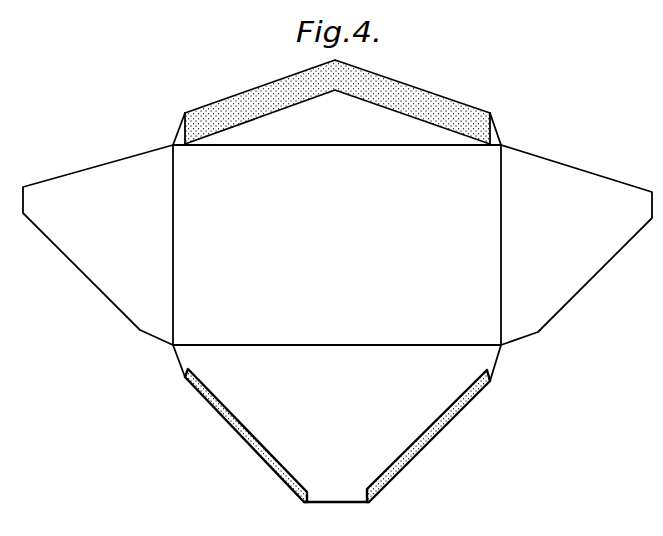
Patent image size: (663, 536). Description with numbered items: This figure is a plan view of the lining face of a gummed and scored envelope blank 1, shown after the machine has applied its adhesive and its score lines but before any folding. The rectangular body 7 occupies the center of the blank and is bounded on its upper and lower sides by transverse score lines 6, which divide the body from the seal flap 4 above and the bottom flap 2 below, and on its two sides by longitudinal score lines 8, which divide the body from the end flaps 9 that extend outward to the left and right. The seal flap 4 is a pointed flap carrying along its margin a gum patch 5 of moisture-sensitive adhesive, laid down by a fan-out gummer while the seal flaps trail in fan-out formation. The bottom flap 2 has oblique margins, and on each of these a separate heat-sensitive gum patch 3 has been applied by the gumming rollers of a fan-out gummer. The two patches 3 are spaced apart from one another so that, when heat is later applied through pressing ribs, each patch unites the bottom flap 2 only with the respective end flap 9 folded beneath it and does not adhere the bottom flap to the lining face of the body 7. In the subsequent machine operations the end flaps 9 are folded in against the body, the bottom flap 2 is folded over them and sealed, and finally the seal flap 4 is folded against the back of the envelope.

The blank 1 is at (452, 93).
The bottom flap 2 is at (475, 355).
The gum patches 3 is at (248, 438).
The seal flap 4 is at (236, 92).
The gum patch 5 is at (395, 89).
The transverse score lines 6 is at (325, 145).
The body 7 is at (337, 264).
The longitudinal score lines 8 is at (177, 255).
The end flaps 9 is at (86, 266).